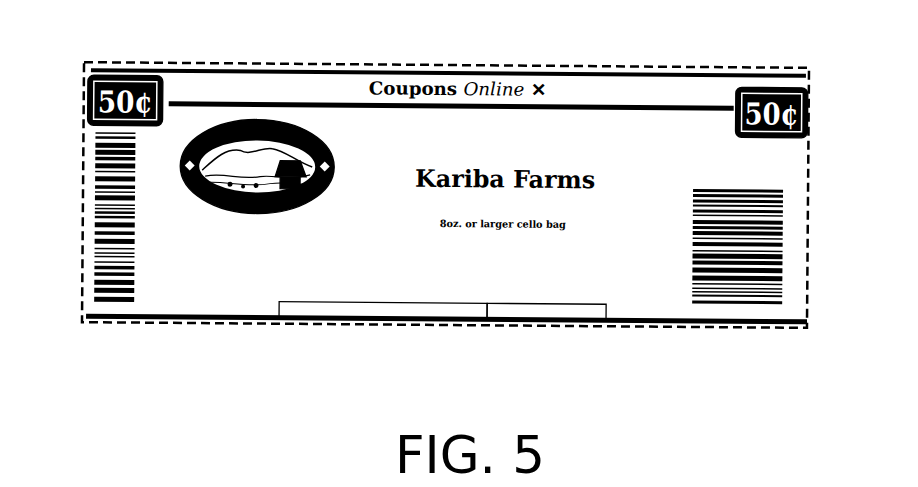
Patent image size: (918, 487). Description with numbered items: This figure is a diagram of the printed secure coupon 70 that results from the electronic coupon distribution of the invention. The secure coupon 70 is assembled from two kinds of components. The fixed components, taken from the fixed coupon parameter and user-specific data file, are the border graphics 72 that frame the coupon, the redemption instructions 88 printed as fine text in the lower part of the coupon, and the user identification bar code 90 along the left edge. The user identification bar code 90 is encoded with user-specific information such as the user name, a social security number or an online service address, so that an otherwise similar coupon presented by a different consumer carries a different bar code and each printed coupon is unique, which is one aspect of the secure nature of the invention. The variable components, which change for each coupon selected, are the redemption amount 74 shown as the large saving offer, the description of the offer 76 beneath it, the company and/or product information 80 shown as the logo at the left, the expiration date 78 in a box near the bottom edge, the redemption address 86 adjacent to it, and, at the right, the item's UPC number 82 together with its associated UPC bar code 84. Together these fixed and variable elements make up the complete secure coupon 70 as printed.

The secure coupon 70 is at (511, 342).
The border graphics 72 is at (567, 70).
The redemption amount 74 is at (620, 136).
The description of the offer 76 is at (603, 210).
The expiration date 78 is at (600, 325).
The company and/or product information 80 is at (257, 123).
The UPC number 82 is at (800, 283).
The UPC bar code 84 is at (755, 183).
The redemption address 86 is at (243, 297).
The redemption instructions 88 is at (147, 297).
The user identification bar code 90 is at (90, 260).